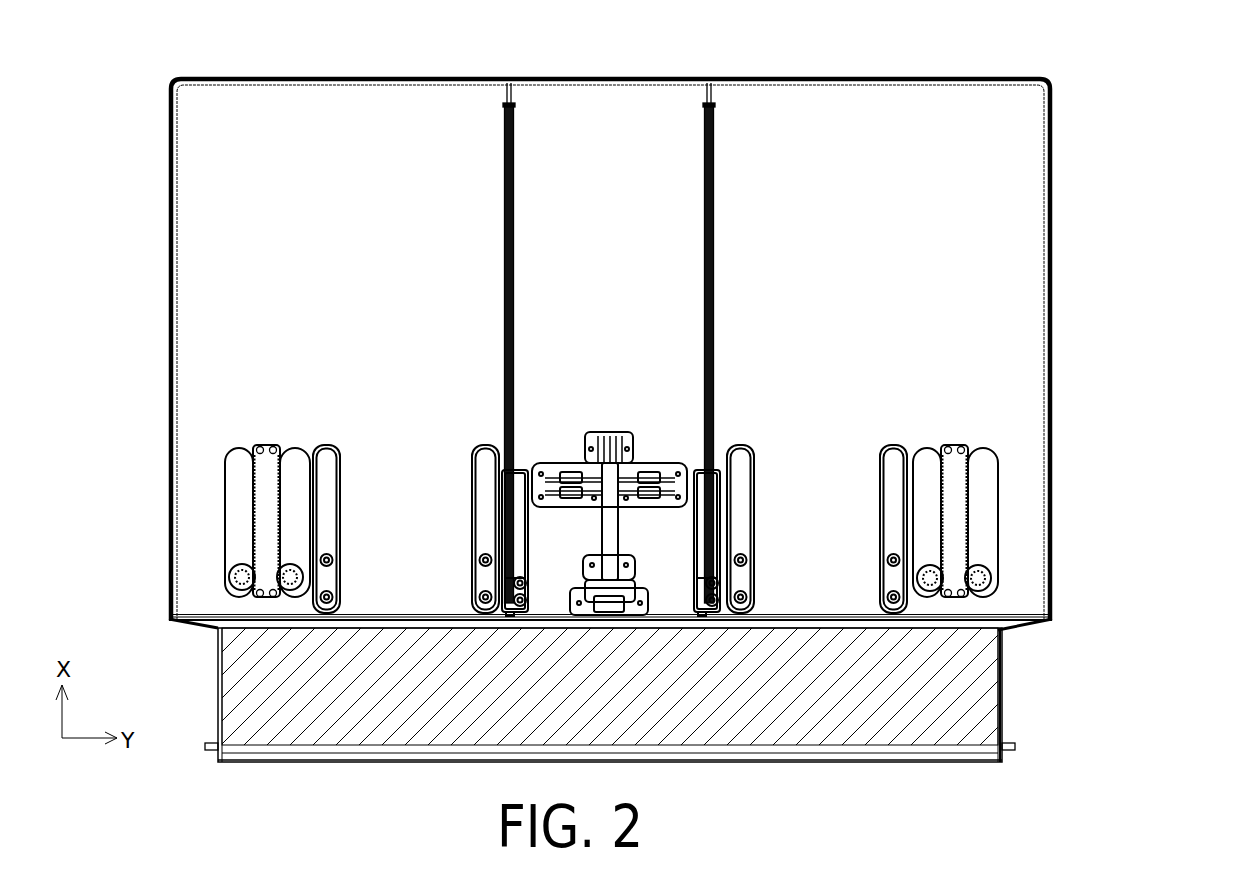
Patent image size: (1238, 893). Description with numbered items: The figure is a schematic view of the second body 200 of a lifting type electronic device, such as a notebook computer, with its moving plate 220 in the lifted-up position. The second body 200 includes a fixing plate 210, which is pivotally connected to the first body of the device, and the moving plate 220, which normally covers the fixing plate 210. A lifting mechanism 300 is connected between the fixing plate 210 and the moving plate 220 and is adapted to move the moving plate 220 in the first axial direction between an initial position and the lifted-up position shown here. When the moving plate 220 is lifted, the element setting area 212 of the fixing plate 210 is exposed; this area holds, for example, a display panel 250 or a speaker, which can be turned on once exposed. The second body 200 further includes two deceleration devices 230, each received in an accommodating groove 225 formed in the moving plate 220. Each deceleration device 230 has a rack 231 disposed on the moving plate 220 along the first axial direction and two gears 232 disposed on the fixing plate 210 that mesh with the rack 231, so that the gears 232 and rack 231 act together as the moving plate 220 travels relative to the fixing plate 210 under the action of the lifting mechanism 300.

The second body 200 is at (1162, 547).
The fixing plate 210 is at (678, 654).
The element setting area 212 is at (1002, 688).
The moving plate 220 is at (1038, 557).
The accommodating groove 225 is at (982, 519).
The deceleration device 230 is at (1038, 498).
The rack 231 is at (955, 478).
The gear 232 is at (993, 568).
The display panel 250 is at (978, 713).
The lifting mechanism 300 is at (650, 453).